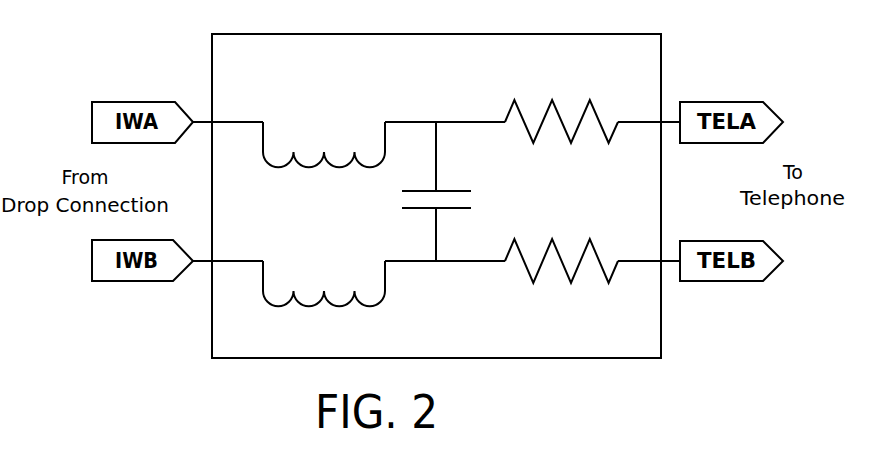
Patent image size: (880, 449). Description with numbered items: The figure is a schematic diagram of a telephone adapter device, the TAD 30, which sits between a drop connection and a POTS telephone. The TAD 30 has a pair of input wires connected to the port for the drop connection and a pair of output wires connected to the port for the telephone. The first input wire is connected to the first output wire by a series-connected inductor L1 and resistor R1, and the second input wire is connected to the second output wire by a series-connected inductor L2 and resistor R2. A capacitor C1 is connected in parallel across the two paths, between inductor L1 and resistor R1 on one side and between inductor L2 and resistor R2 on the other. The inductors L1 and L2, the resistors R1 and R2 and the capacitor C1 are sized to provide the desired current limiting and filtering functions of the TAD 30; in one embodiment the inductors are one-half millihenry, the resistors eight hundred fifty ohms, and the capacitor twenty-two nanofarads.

The TAD 30 is at (548, 358).
The inductor L1 is at (324, 162).
The inductor L2 is at (324, 300).
The capacitor C1 is at (440, 191).
The resistor R1 is at (561, 104).
The resistor R2 is at (561, 243).